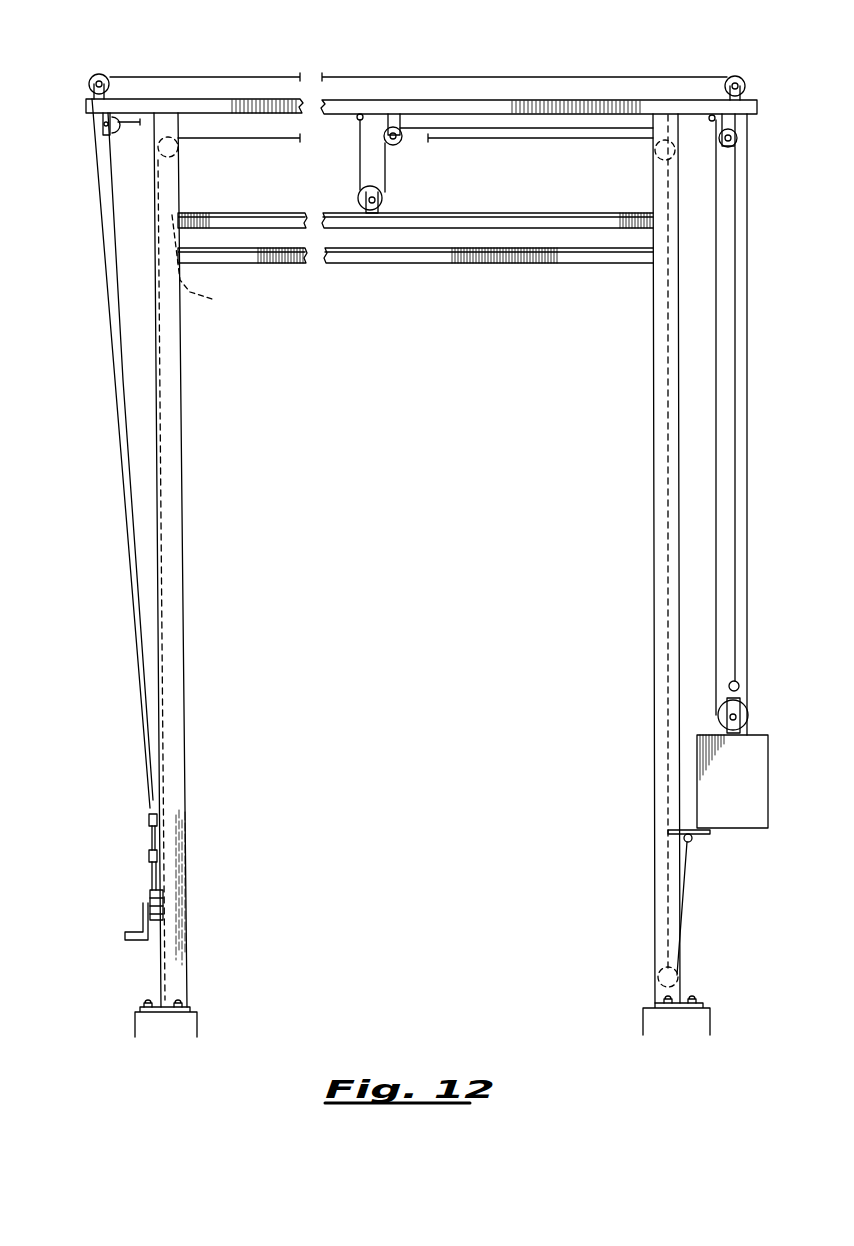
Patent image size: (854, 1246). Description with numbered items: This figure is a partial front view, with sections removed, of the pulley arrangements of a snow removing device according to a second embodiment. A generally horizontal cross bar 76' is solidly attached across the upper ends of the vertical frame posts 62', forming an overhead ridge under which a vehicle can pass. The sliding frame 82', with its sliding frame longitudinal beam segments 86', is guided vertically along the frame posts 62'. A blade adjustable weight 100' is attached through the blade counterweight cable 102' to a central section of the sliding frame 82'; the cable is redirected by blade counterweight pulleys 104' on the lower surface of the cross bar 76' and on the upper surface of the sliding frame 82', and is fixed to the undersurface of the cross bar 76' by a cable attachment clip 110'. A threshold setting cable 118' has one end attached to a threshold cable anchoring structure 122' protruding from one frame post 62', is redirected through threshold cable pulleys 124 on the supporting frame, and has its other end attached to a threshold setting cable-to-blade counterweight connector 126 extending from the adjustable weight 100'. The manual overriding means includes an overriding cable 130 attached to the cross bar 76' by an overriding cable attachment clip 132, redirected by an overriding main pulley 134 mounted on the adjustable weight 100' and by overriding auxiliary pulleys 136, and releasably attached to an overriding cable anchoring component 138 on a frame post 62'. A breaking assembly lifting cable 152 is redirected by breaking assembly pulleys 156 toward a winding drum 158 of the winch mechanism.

The cross bar 76' is at (421, 73).
The cable attachment clip 110' is at (415, 82).
The sliding frame 82' is at (415, 261).
The sliding frame longitudinal beam segment 86' is at (415, 273).
The vertical frame post 62' is at (422, 575).
The threshold cable pulley 124 is at (176, 108).
The overriding auxiliary pulley 136 is at (95, 78).
The overriding cable attachment clip 132 is at (723, 110).
The blade counterweight pulley 104' is at (581, 163).
The blade counterweight cable 102' is at (762, 415).
The overriding cable 130 is at (750, 645).
The overriding main pulley 134 is at (748, 712).
The blade adjustable weight 100' is at (766, 781).
The threshold setting cable-to-blade counterweight connector 126 is at (680, 818).
The threshold setting cable 118' is at (467, 557).
The breaking assembly lifting cable 152 is at (115, 272).
The breaking assembly pulley 156 is at (115, 137).
The threshold cable anchoring structure 122' is at (110, 830).
The overriding cable anchoring component 138 is at (150, 855).
The winding drum 158 is at (160, 900).